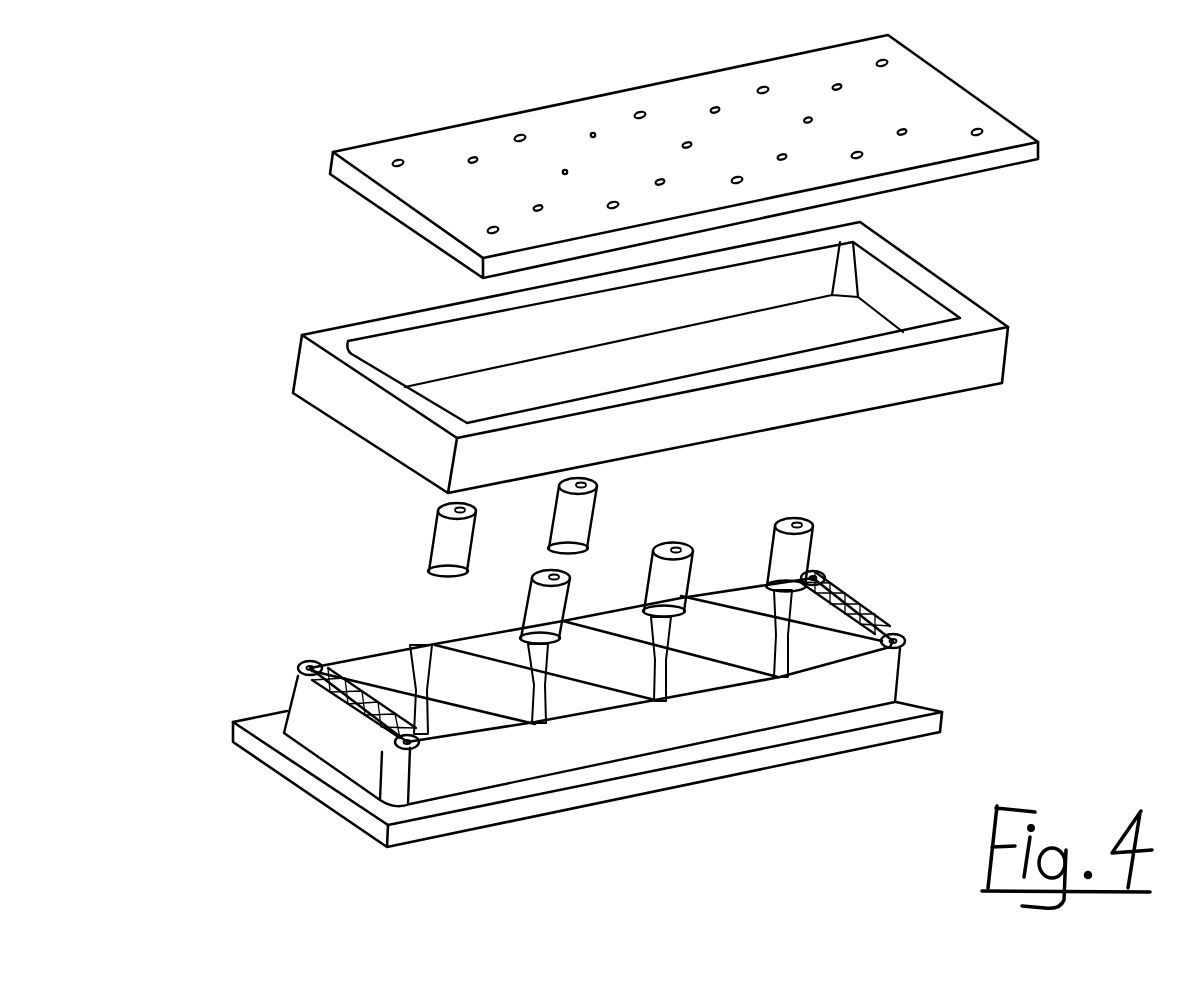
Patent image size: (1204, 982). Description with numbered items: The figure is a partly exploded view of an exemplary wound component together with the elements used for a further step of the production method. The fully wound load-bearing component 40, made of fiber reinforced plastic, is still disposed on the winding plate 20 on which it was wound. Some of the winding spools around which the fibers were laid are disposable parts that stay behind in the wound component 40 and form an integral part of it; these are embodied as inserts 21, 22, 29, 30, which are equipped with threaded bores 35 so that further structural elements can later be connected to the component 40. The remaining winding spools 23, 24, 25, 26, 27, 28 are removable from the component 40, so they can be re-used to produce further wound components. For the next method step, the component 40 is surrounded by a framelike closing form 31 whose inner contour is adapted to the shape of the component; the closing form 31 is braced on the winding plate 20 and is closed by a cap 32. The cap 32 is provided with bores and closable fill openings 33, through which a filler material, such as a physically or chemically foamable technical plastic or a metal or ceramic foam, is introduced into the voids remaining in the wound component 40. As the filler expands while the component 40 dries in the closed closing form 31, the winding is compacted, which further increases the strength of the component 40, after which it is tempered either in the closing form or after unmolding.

The winding plate 20 is at (871, 740).
The insert 21 is at (395, 741).
The insert 22 is at (306, 667).
The winding spool 23 is at (523, 600).
The winding spool 24 is at (435, 540).
The winding spool 25 is at (653, 580).
The winding spool 26 is at (557, 513).
The winding spool 27 is at (778, 548).
The winding spool 28 is at (682, 633).
The insert 29 is at (906, 644).
The insert 30 is at (812, 578).
The closing form 31 is at (947, 288).
The cap 32 is at (972, 92).
The fill openings 33 is at (565, 172).
The threaded bores 35 is at (313, 665).
The wound component 40 is at (842, 612).